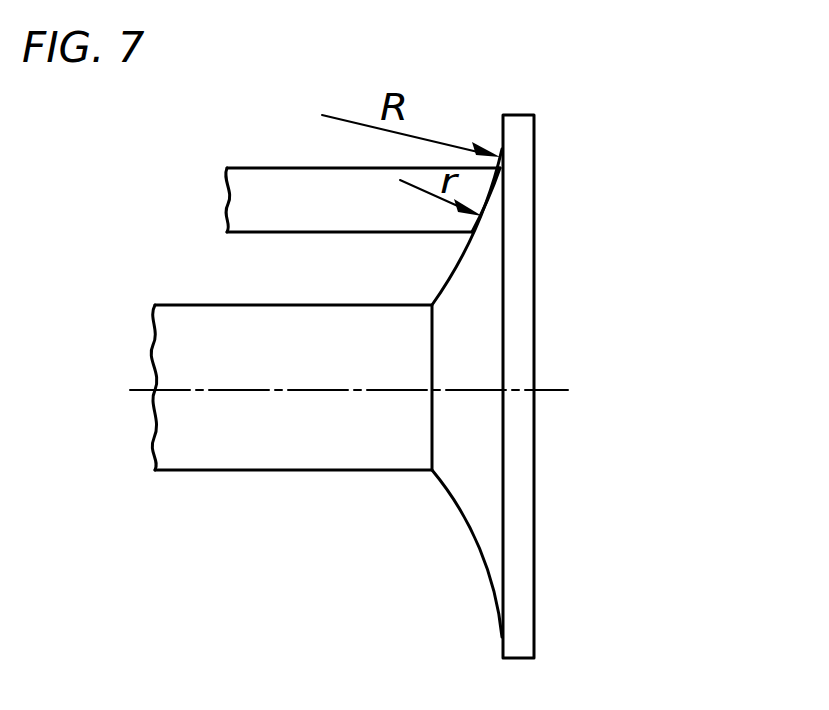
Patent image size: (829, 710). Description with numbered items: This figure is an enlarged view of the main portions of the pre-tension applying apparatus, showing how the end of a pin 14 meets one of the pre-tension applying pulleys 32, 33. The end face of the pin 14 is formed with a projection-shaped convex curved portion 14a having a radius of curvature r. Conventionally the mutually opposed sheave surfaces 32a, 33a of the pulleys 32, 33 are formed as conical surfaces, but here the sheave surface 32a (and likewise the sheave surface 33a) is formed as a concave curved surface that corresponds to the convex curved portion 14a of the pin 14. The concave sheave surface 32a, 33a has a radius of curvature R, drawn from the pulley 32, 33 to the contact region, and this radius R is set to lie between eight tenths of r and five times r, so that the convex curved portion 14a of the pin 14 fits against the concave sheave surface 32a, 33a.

The pin 14 is at (268, 190).
The convex curved portion 14a is at (497, 165).
The pre-tension applying pulley 32 is at (419, 386).
The pre-tension applying pulley 33 is at (535, 548).
The sheave surface 32a is at (584, 227).
The sheave surface 33a is at (452, 265).